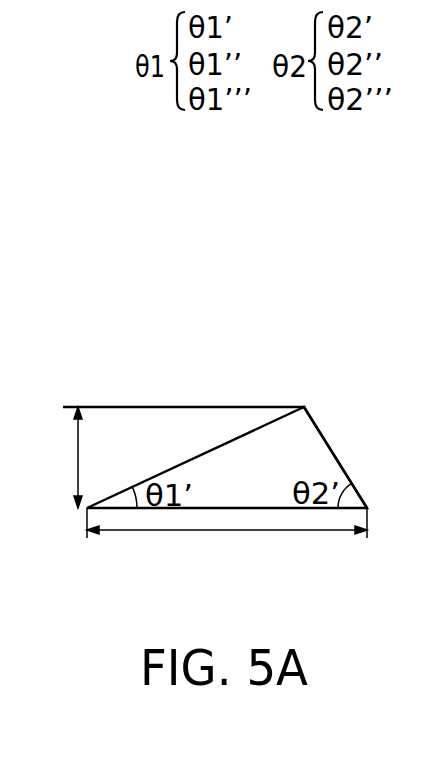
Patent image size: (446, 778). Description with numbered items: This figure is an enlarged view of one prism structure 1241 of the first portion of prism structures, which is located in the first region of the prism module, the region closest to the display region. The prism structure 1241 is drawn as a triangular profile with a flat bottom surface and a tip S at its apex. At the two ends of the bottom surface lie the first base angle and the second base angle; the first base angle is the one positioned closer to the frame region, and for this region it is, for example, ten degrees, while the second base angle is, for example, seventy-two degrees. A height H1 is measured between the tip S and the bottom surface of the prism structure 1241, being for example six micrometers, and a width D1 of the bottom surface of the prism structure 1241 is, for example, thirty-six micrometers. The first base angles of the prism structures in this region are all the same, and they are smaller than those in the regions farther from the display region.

The prism structure 1241 is at (318, 448).
The tip S is at (304, 407).
The height H1 is at (60, 457).
The width D1 is at (227, 541).